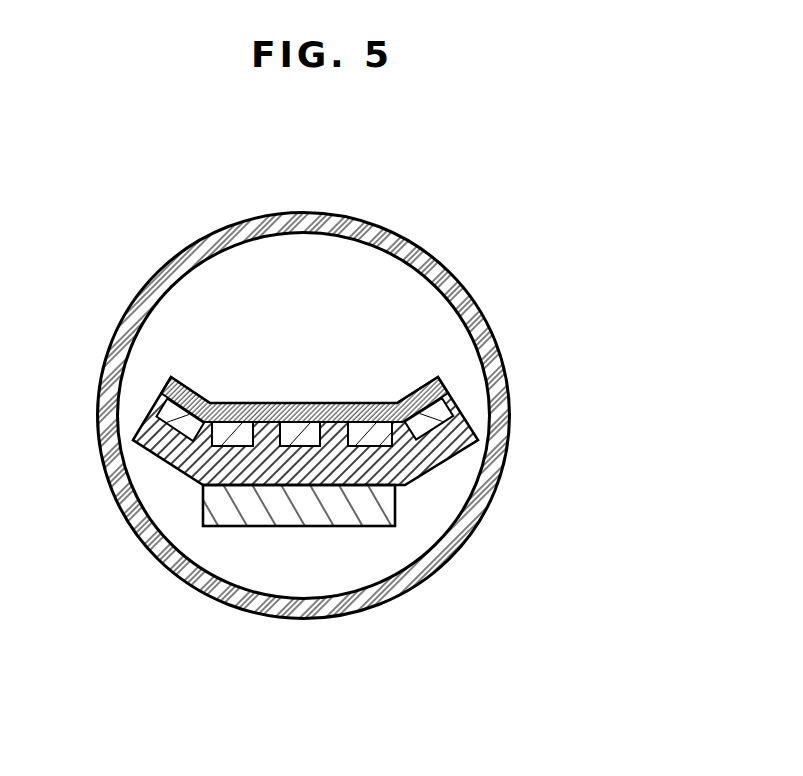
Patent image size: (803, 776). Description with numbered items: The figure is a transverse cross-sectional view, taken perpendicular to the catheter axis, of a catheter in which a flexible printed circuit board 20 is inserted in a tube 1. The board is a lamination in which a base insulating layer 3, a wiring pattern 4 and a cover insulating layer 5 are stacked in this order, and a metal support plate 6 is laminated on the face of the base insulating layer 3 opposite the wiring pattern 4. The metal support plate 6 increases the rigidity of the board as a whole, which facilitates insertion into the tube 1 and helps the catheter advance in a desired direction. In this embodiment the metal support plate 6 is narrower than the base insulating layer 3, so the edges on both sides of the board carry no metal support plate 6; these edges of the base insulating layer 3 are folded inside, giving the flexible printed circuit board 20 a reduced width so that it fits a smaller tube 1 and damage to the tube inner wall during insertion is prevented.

The tube 1 is at (323, 222).
The flexible printed circuit board 20 is at (322, 388).
The base insulating layer 3 is at (445, 437).
The wiring pattern 4 is at (372, 445).
The cover insulating layer 5 is at (377, 403).
The metal support plate 6 is at (318, 512).